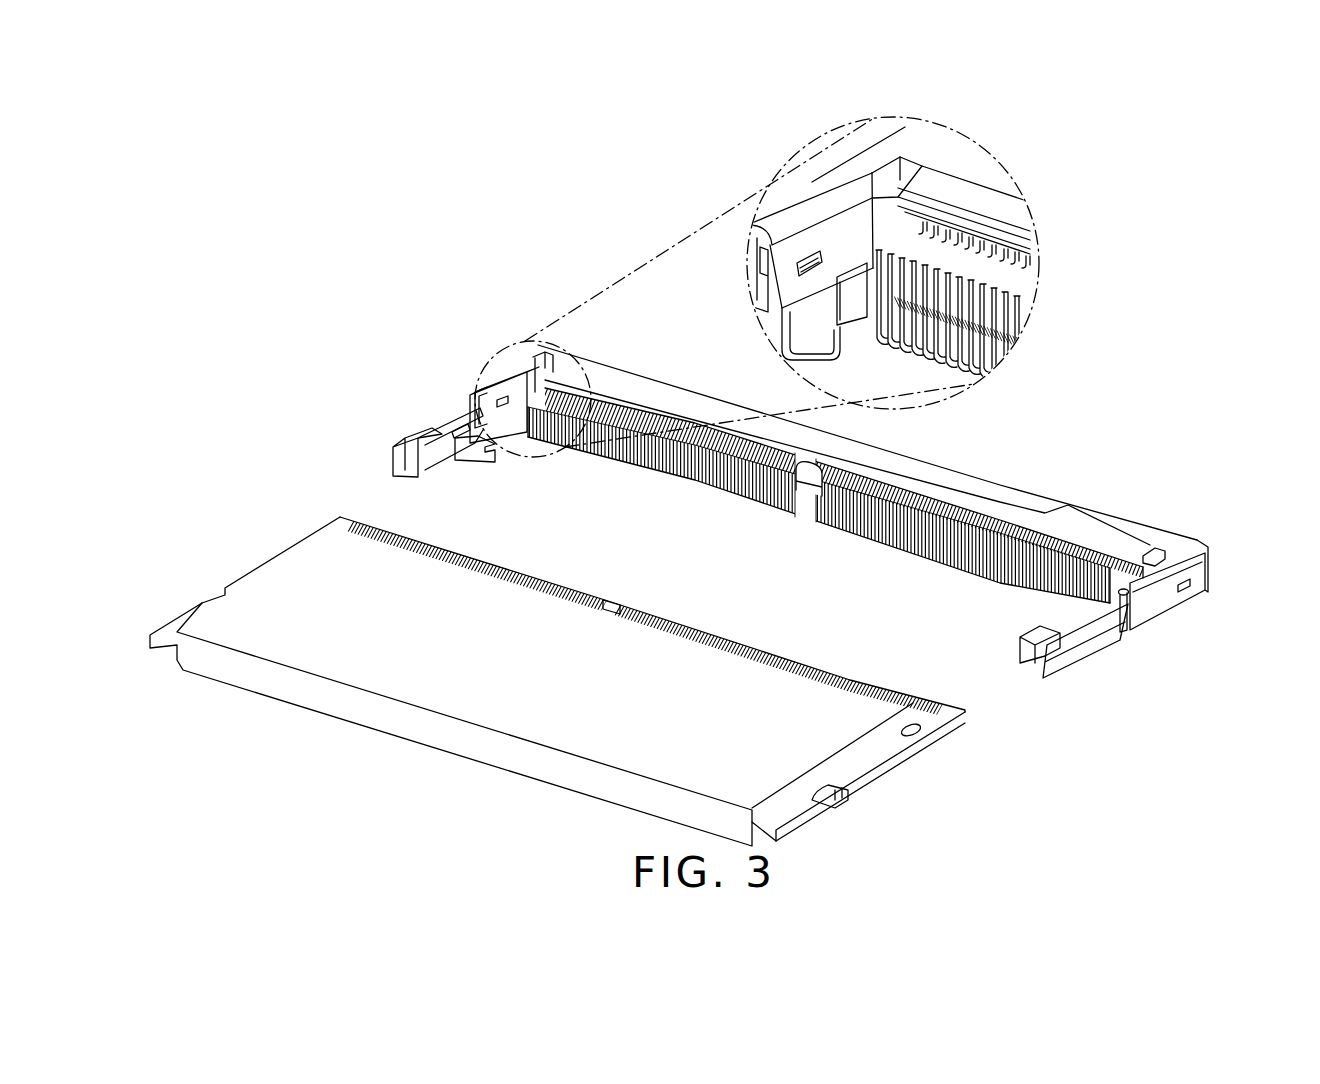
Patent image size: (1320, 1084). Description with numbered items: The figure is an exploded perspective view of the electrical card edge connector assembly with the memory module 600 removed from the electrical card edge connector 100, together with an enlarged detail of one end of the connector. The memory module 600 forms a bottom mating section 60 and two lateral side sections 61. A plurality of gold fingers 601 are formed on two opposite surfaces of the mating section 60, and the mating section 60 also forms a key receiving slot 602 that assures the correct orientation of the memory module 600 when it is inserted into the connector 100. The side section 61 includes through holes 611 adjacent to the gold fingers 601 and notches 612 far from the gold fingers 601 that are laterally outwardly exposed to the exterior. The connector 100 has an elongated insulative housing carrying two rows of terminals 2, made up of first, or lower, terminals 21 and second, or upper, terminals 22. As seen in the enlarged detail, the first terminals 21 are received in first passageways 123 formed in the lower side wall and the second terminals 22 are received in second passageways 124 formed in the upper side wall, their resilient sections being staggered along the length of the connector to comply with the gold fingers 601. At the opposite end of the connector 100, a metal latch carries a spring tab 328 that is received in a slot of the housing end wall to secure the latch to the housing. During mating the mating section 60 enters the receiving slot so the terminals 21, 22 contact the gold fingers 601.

The electrical card edge connector 100 is at (454, 361).
The contacts 2 is at (1131, 270).
The first terminals 21 is at (1022, 298).
The second terminals 22 is at (1022, 263).
The first passageways 123 is at (877, 243).
The second passageways 124 is at (999, 237).
The spring tab 328 is at (1187, 578).
The memory module 600 is at (256, 544).
The mating section 60 is at (694, 632).
The gold fingers 601 is at (803, 667).
The key receiving slot 602 is at (605, 608).
The lateral side section 61 is at (882, 748).
The through holes 611 is at (917, 731).
The notches 612 is at (827, 795).